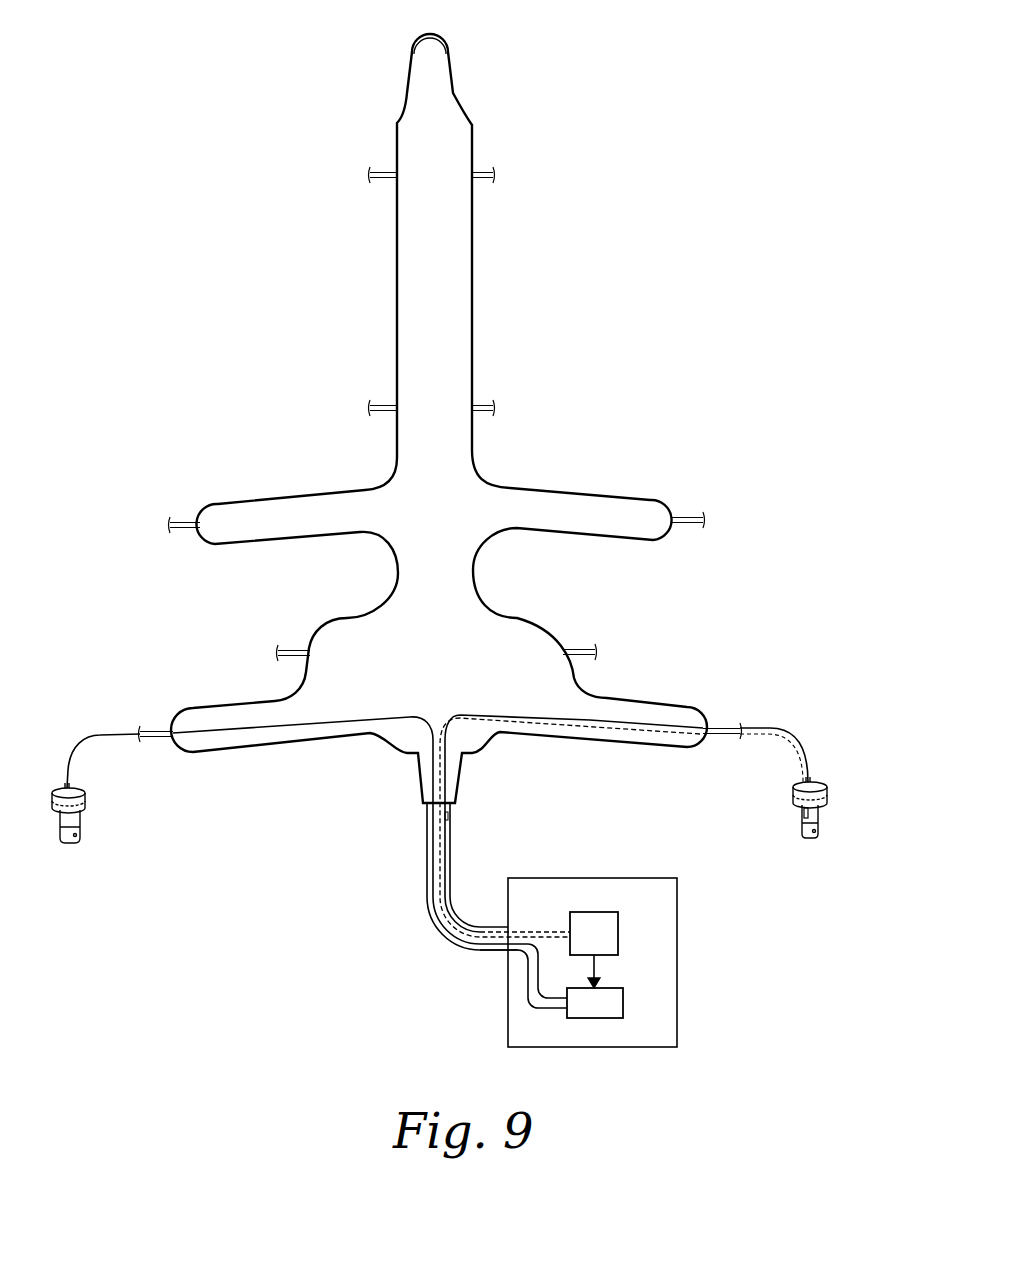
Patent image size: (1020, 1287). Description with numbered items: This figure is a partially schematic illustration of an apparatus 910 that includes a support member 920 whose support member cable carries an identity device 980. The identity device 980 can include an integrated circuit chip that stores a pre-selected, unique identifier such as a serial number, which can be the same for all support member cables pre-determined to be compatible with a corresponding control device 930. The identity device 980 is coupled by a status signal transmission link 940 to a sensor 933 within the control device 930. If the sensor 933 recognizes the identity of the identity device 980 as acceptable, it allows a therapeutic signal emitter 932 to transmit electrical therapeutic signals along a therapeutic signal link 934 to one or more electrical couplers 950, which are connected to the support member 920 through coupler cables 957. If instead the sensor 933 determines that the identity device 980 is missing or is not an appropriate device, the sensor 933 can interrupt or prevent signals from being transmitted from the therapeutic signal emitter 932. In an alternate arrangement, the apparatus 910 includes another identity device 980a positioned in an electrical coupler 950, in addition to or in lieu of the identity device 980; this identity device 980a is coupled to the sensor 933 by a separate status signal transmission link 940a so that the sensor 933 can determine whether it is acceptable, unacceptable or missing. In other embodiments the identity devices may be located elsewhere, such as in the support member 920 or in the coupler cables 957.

The apparatus 910 is at (441, 418).
The support member 920 is at (470, 281).
The control device 930 is at (677, 915).
The therapeutic signal emitter 932 is at (623, 1013).
The sensor 933 is at (597, 912).
The therapeutic signal link 934 is at (443, 929).
The status signal transmission link 940 is at (452, 850).
The status signal transmission link 940a is at (475, 952).
The electrical coupler 950 is at (85, 808).
The coupler cable 957 is at (70, 776).
The identity device 980 is at (450, 818).
The identity device 980a is at (802, 813).